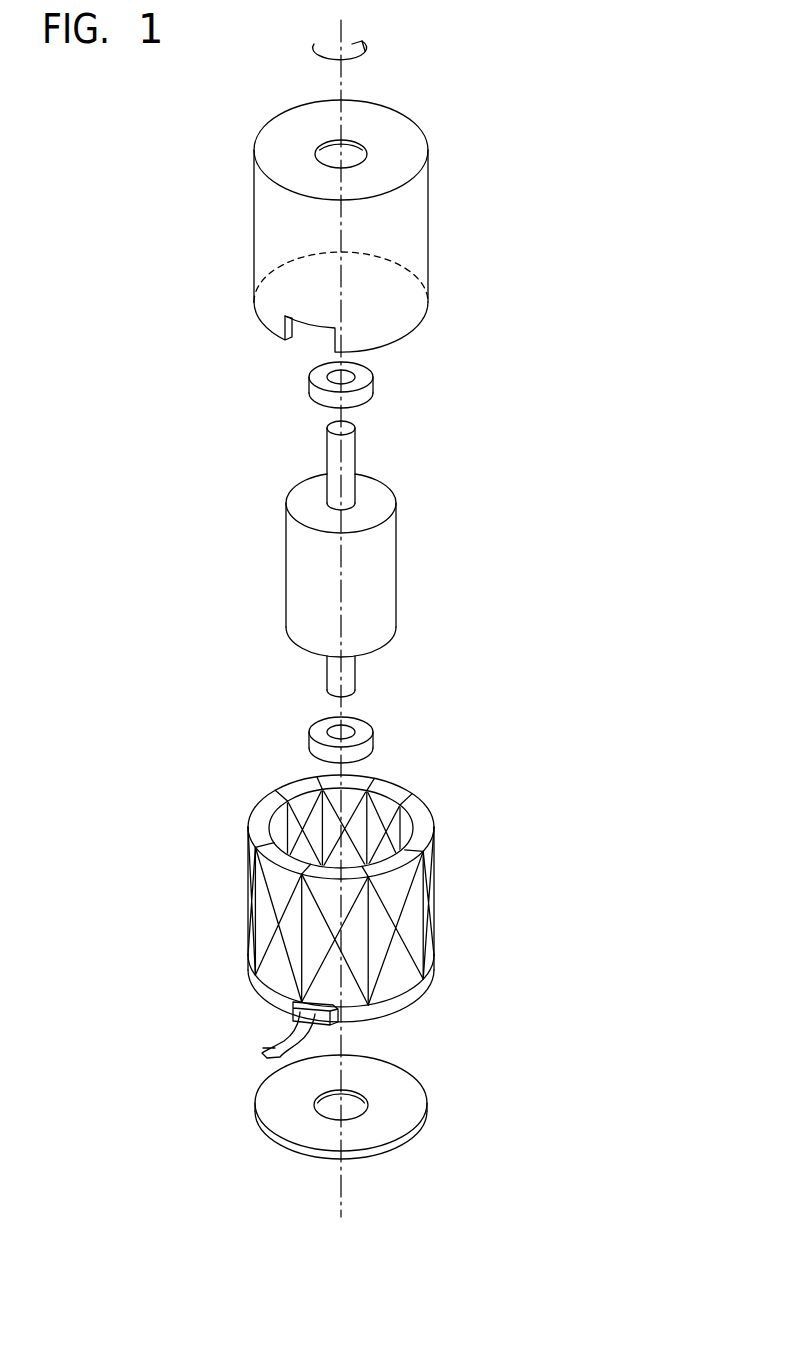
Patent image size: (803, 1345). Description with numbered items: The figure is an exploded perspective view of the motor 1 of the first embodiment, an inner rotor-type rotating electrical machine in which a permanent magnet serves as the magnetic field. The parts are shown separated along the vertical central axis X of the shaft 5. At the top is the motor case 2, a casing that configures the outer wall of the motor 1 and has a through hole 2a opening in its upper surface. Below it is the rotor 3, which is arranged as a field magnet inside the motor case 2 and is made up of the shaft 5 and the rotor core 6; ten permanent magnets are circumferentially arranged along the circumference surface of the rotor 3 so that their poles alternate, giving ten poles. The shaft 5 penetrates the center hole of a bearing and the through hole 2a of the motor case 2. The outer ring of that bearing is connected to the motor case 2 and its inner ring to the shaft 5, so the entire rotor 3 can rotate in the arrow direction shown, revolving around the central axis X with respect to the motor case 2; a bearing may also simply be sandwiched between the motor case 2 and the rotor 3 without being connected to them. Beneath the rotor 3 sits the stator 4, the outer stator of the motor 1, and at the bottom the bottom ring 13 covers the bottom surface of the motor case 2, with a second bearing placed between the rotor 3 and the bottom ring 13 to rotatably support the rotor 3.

The motor 1 is at (632, 100).
The motor case 2 is at (377, 226).
The through hole 2a is at (364, 144).
The rotor 3 is at (347, 559).
The stator 4 is at (452, 888).
The shaft 5 is at (345, 455).
The rotor core 6 is at (299, 578).
The bottom ring 13 is at (425, 1092).
The central axis X is at (343, 85).